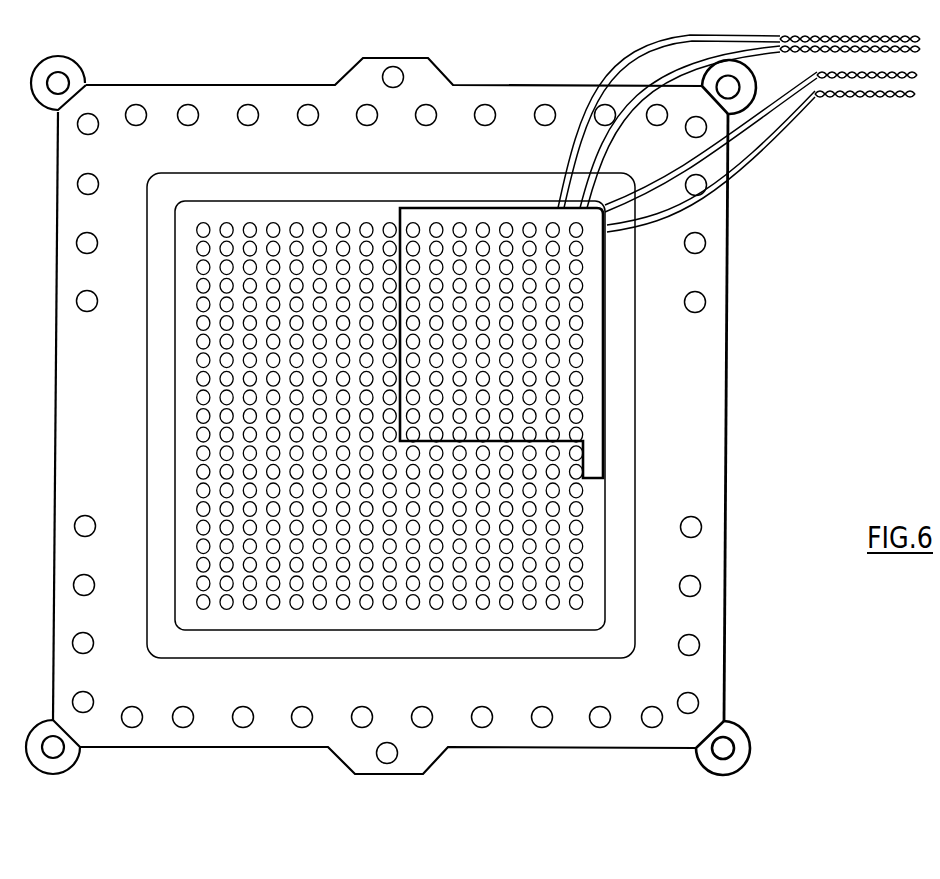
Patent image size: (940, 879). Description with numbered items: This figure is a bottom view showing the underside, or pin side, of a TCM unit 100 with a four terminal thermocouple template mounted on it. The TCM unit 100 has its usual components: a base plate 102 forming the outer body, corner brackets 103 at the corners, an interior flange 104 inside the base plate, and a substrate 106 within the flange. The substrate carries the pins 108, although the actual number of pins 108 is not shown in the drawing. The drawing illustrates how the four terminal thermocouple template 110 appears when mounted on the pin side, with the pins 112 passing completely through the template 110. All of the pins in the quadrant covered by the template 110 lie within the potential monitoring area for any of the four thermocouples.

The TCM unit 100 is at (473, 405).
The base plate 102 is at (703, 407).
The corner brackets 103 is at (740, 740).
The interior flange 104 is at (627, 497).
The substrate 106 is at (597, 586).
The pins 108 is at (192, 412).
The four terminal thermocouple template 110 is at (603, 300).
The pins 112 is at (447, 205).